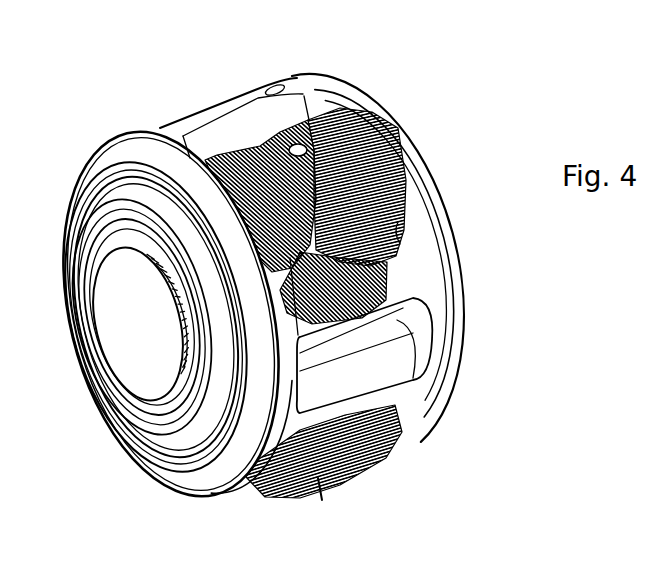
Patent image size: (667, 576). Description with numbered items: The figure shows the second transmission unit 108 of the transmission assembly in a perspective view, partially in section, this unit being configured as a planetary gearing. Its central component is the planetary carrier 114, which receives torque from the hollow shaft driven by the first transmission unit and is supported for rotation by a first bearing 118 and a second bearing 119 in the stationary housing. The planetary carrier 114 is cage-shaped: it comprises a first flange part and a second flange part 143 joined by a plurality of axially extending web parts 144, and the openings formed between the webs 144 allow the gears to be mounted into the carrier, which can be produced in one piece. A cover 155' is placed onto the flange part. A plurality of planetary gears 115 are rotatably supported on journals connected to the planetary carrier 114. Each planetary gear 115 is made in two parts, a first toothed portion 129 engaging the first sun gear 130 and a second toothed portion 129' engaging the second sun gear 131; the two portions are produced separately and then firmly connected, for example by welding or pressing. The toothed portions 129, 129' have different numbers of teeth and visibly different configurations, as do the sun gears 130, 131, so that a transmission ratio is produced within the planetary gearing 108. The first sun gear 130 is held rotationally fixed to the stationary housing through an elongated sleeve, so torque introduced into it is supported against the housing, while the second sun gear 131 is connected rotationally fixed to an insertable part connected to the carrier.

The second transmission unit 108 is at (191, 70).
The planetary carrier 114 is at (120, 125).
The cover 155' is at (147, 316).
The first bearing 118 is at (137, 445).
The second bearing 119 is at (463, 312).
The planetary gear 115 is at (335, 112).
The second toothed portion 129' is at (292, 141).
The first toothed portion 129 is at (377, 171).
The first sun gear 130 is at (362, 268).
The second flange part 143 is at (404, 240).
The second sun gear 131 is at (292, 325).
The web part 144 is at (385, 375).